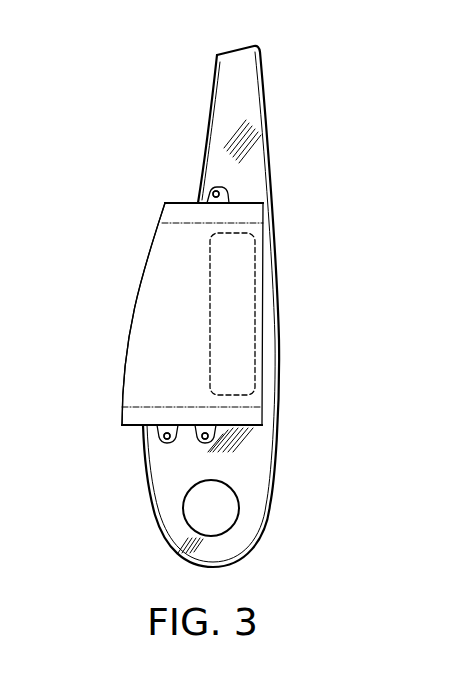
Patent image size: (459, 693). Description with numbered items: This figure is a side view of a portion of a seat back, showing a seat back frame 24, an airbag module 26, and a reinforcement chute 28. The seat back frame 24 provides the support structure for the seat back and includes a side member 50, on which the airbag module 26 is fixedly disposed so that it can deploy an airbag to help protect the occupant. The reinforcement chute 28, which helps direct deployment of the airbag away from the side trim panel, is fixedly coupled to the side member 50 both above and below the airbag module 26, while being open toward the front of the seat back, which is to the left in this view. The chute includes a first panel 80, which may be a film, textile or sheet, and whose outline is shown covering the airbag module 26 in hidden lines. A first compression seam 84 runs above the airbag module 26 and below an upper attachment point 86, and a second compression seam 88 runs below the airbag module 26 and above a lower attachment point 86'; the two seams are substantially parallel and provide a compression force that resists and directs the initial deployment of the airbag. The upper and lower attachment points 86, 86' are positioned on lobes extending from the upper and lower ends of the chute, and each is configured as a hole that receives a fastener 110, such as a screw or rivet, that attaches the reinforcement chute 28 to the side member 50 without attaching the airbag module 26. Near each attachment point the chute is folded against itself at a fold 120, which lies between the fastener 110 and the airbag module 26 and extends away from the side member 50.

The seat back frame 24 is at (258, 306).
The seat back side member 50 is at (266, 103).
The airbag module 26 is at (256, 323).
The reinforcement chute 28 is at (162, 253).
The first panel 80 is at (184, 337).
The first compression seam 84 is at (176, 213).
The upper attachment point 86 is at (171, 166).
The lower attachment point 86' is at (148, 489).
The second compression seam 88 is at (139, 425).
The fastener 110 is at (154, 341).
The fold 120 is at (214, 208).